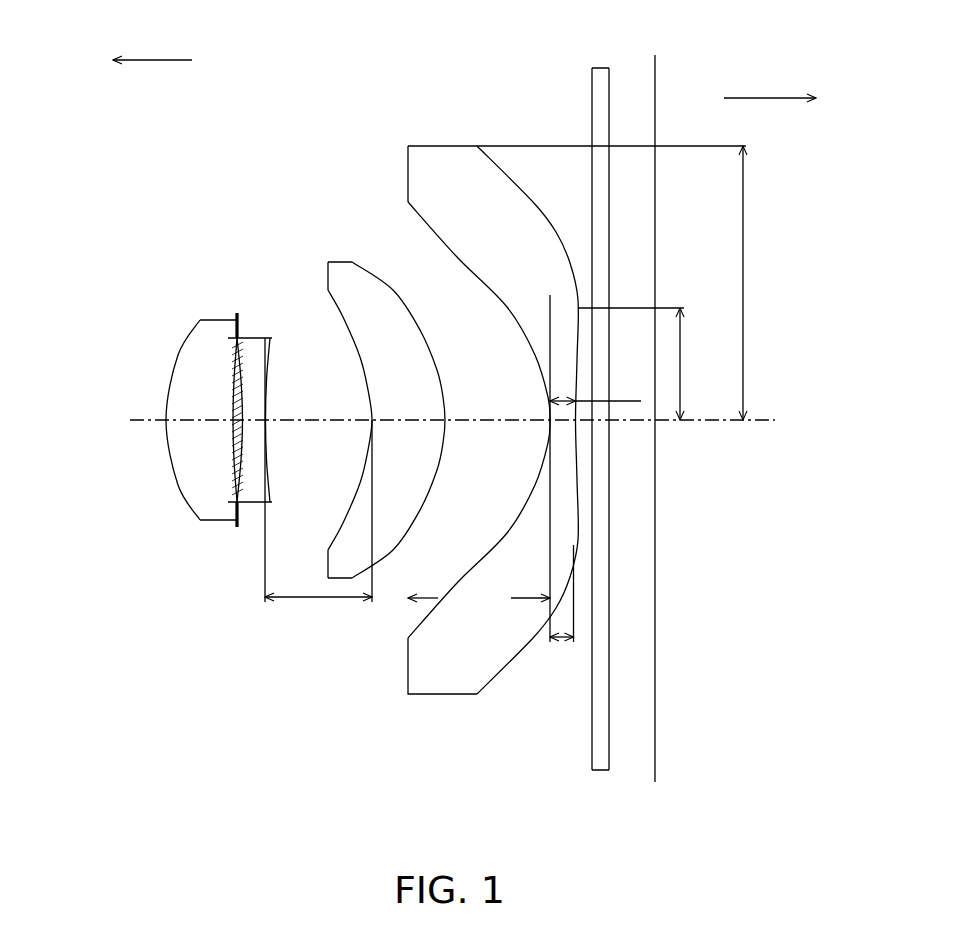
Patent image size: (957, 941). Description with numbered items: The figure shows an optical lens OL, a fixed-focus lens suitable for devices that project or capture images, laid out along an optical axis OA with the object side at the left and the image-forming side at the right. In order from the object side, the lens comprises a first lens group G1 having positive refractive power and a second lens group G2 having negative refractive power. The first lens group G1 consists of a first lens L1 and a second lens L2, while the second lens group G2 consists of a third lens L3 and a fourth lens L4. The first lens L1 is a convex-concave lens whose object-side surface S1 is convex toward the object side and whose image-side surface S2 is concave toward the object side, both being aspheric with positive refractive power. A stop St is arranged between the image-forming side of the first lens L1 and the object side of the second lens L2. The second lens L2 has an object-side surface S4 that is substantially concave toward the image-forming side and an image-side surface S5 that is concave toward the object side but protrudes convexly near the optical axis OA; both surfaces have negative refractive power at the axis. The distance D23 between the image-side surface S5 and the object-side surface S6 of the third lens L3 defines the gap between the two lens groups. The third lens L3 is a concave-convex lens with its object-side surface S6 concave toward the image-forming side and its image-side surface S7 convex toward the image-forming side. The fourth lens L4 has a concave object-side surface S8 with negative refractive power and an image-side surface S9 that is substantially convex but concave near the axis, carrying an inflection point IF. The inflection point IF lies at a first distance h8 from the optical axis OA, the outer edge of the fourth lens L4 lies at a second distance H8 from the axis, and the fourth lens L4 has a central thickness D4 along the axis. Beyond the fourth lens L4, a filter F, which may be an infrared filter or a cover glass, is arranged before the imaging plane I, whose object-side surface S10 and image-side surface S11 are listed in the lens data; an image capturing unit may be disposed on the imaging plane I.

The optical lens OL is at (67, 36).
The optical axis OA is at (700, 422).
The first lens group G1 is at (211, 436).
The second lens group G2 is at (504, 459).
The first lens L1 is at (211, 441).
The second lens L2 is at (211, 450).
The third lens L3 is at (400, 501).
The fourth lens L4 is at (546, 443).
The stop St is at (241, 323).
The object-side surface of the first lens S1 is at (165, 438).
The image-side surface of the first lens S2 is at (244, 456).
The object-side surface of the second lens S4 is at (230, 367).
The image-side surface of the second lens S5 is at (272, 387).
The object-side surface of the third lens S6 is at (364, 428).
The image-side surface of the third lens S7 is at (445, 393).
The object-side surface of the fourth lens S8 is at (527, 503).
The image-side surface of the fourth lens S9 is at (552, 217).
The object-side surface of the filter S10 is at (589, 99).
The image-side surface of the filter S11 is at (611, 99).
The inflection point IF is at (580, 308).
The filter F is at (591, 422).
The imaging plane I is at (656, 772).
The second distance H8 is at (590, 283).
The first distance h8 is at (695, 364).
The distance D23 is at (318, 479).
The thickness D4 is at (561, 605).